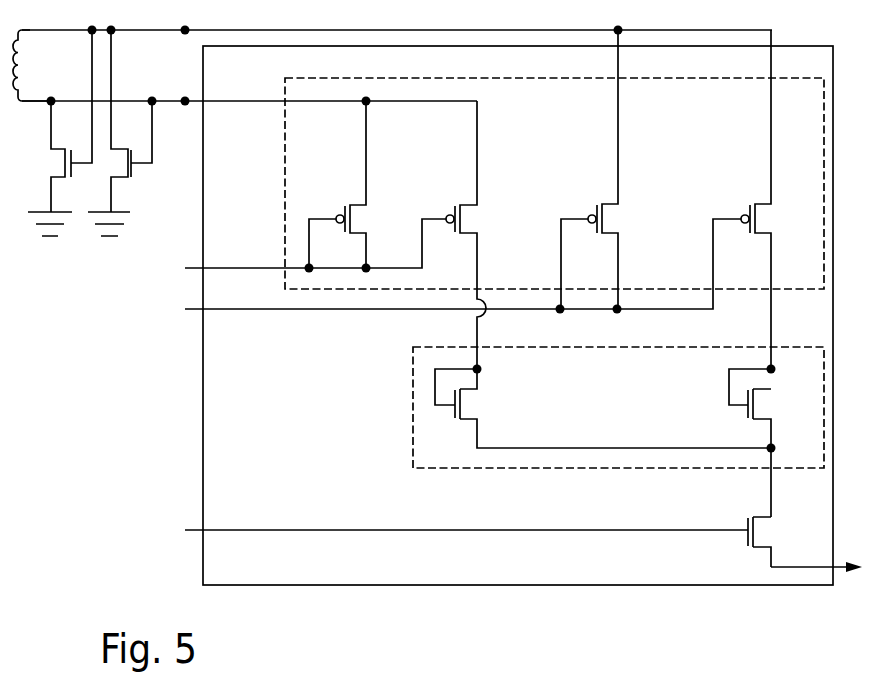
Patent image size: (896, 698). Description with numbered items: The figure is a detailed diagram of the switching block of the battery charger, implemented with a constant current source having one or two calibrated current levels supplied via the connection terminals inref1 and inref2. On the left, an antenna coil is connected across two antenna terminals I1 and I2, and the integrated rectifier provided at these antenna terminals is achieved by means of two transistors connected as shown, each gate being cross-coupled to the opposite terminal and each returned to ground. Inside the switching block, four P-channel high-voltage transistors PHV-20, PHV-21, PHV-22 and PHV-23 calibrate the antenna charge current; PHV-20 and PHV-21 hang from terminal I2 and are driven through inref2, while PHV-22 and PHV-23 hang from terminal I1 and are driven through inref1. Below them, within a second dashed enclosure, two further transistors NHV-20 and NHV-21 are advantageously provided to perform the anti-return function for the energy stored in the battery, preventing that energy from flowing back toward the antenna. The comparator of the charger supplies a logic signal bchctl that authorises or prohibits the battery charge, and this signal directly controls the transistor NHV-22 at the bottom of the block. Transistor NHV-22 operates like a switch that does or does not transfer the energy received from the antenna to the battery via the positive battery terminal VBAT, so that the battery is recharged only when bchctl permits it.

The calibration transistor PHV-20 is at (362, 184).
The calibration transistor PHV-21 is at (486, 235).
The calibration transistor PHV-22 is at (614, 169).
The calibration transistor PHV-23 is at (781, 199).
The anti-return transistor NHV-20 is at (775, 443).
The anti-return transistor NHV-21 is at (603, 408).
The switching transistor NHV-22 is at (785, 542).
The antenna terminal I1 is at (397, 17).
The antenna terminal I2 is at (249, 89).
The connection terminal inref1 is at (425, 269).
The connection terminal inref2 is at (278, 249).
The battery charge control signal bchctl is at (430, 530).
The positive battery terminal VBAT is at (823, 577).